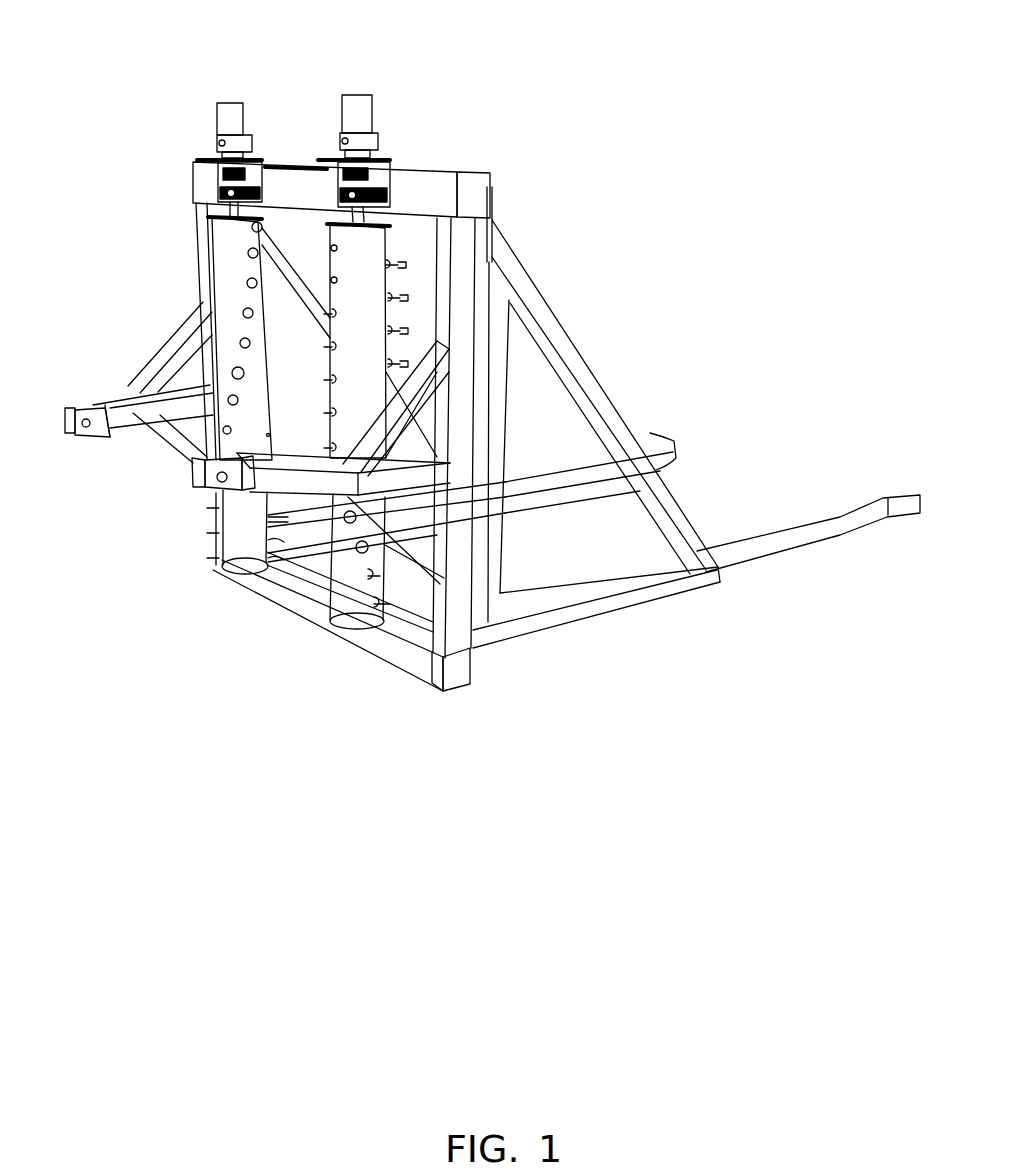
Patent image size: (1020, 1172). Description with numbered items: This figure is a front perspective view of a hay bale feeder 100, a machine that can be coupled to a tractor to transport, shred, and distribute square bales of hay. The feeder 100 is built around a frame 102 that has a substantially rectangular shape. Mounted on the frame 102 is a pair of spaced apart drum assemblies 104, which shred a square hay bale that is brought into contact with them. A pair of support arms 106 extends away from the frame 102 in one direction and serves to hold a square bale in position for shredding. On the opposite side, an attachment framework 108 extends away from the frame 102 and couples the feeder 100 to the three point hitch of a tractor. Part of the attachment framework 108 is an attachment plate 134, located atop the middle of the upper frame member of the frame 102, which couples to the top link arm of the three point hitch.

The hay bale feeder 100 is at (584, 72).
The frame 102 is at (455, 638).
The drum assemblies 104 is at (195, 132).
The support arms 106 is at (655, 455).
The attachment framework 108 is at (75, 392).
The attachment plate 134 is at (295, 165).